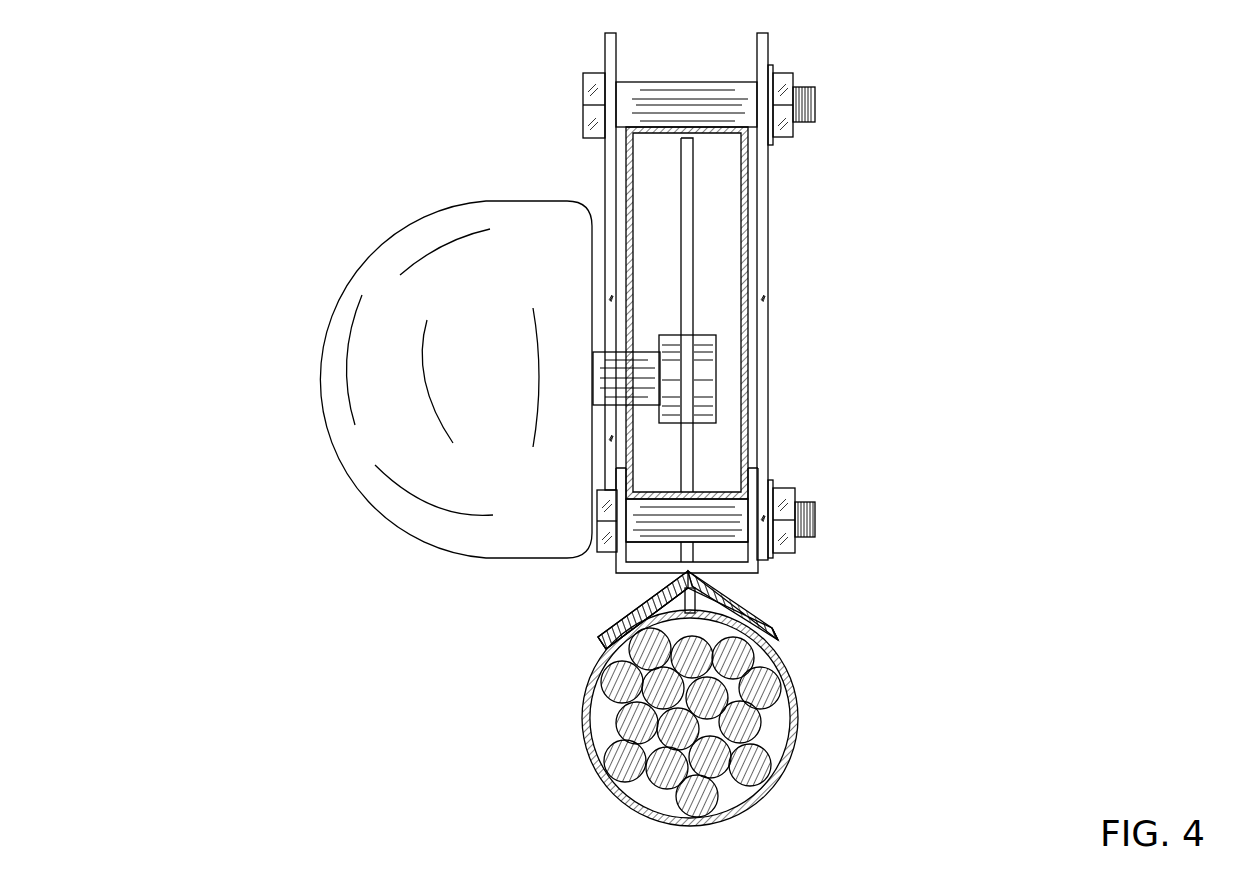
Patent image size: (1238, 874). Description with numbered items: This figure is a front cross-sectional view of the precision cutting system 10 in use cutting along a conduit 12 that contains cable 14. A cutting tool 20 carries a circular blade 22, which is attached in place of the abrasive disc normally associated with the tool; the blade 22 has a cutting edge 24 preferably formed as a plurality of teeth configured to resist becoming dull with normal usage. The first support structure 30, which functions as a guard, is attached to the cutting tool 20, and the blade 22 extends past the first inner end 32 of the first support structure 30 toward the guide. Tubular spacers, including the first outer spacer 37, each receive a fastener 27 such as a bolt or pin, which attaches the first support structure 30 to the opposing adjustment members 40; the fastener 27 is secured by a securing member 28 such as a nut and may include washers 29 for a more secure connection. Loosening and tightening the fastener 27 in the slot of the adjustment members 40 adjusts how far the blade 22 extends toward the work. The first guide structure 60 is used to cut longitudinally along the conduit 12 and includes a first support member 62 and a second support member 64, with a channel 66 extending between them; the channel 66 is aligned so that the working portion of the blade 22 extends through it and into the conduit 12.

The precision cutting system 10 is at (176, 138).
The conduit 12 is at (797, 732).
The cable 14 is at (765, 740).
The cutting tool 20 is at (295, 431).
The blade 22 is at (693, 435).
The cutting edge 24 is at (636, 607).
The fastener 27 is at (587, 73).
The securing member 28 is at (795, 82).
The washer 29 is at (776, 68).
The first support structure 30 is at (750, 250).
The first inner end 32 is at (758, 580).
The first outer spacer 37 is at (650, 82).
The adjustment member 40 is at (605, 185).
The first guide structure 60 is at (760, 606).
The first support member 62 is at (600, 636).
The second support member 64 is at (774, 630).
The channel 66 is at (684, 600).